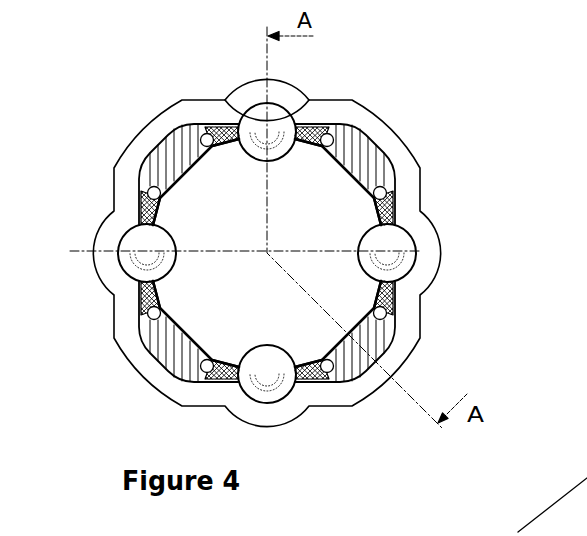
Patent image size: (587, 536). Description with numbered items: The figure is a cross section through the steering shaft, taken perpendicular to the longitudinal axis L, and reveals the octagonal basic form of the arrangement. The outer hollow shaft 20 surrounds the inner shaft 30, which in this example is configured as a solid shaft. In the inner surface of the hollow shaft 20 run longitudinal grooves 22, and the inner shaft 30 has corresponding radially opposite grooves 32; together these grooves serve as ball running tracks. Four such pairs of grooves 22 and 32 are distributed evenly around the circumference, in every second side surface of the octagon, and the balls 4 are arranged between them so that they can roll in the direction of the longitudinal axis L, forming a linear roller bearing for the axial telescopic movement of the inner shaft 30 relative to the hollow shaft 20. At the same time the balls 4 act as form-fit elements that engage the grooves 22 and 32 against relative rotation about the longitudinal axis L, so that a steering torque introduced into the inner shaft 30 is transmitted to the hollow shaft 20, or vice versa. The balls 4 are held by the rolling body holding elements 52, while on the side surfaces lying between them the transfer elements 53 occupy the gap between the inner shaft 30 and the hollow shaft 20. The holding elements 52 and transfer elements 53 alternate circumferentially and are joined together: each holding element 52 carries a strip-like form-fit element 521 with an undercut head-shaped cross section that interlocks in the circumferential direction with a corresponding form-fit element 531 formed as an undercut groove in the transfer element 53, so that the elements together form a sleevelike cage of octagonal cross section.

The ball 4 is at (266, 137).
The hollow shaft 20 is at (165, 118).
The groove 22 is at (262, 136).
The inner shaft 30 is at (242, 229).
The groove 32 is at (182, 150).
The rolling body holding element 52 is at (313, 126).
The form-fit element 521 is at (329, 136).
The transfer element 53 is at (178, 166).
The form-fit element 531 is at (333, 146).
The longitudinal axis L is at (237, 248).